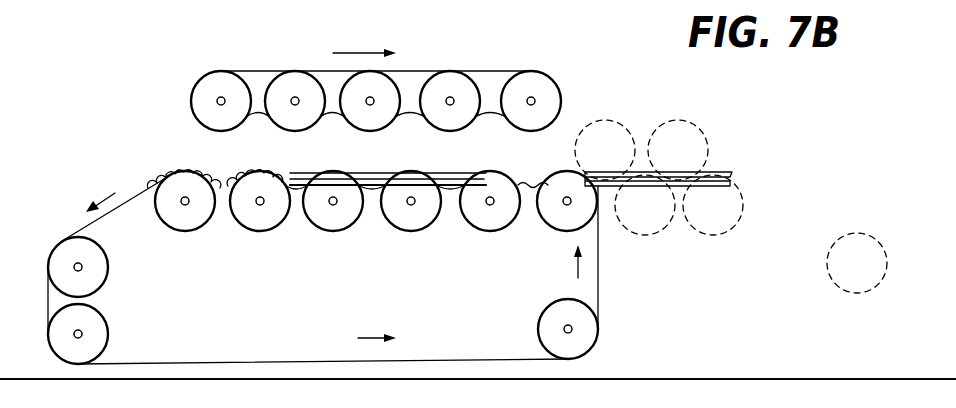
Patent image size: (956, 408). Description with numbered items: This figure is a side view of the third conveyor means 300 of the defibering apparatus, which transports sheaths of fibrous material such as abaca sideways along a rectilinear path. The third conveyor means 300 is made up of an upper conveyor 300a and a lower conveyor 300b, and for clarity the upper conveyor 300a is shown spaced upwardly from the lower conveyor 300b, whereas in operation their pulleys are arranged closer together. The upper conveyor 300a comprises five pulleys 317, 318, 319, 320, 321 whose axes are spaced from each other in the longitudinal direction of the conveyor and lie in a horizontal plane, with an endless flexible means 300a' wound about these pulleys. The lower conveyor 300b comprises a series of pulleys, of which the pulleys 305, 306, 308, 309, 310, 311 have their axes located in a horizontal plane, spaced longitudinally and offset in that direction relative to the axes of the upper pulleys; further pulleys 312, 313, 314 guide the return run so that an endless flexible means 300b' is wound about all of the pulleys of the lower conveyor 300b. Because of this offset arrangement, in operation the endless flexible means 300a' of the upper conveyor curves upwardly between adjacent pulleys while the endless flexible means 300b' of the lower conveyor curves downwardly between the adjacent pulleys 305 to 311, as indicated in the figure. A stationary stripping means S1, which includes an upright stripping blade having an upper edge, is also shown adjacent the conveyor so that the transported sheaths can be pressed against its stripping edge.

The third conveyor means 300 is at (575, 116).
The upper conveyor 300a is at (432, 69).
The endless flexible means 300a' is at (376, 46).
The lower conveyor 300b is at (375, 255).
The endless flexible means 300b' is at (323, 340).
The pulley 305 is at (573, 218).
The pulley 306 is at (496, 218).
The pulley 308 is at (418, 218).
The pulley 309 is at (336, 218).
The pulley 310 is at (262, 218).
The pulley 311 is at (178, 218).
The pulley 312 is at (98, 281).
The pulley 313 is at (100, 342).
The pulley 314 is at (548, 327).
The pulley 317 is at (537, 118).
The pulley 318 is at (447, 118).
The pulley 319 is at (365, 118).
The pulley 320 is at (290, 118).
The pulley 321 is at (212, 116).
The stripping means S1 is at (712, 171).